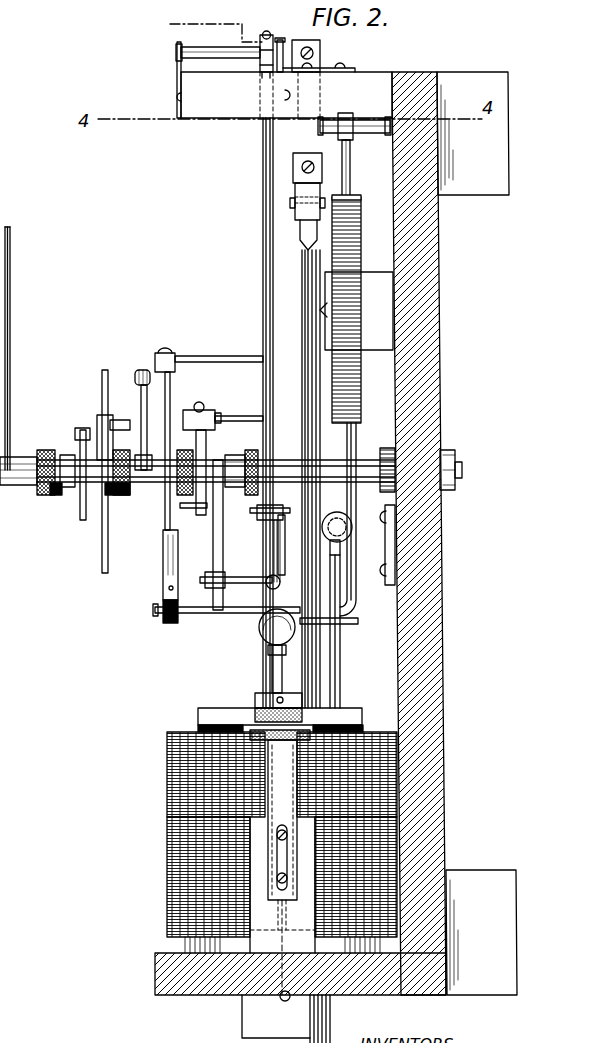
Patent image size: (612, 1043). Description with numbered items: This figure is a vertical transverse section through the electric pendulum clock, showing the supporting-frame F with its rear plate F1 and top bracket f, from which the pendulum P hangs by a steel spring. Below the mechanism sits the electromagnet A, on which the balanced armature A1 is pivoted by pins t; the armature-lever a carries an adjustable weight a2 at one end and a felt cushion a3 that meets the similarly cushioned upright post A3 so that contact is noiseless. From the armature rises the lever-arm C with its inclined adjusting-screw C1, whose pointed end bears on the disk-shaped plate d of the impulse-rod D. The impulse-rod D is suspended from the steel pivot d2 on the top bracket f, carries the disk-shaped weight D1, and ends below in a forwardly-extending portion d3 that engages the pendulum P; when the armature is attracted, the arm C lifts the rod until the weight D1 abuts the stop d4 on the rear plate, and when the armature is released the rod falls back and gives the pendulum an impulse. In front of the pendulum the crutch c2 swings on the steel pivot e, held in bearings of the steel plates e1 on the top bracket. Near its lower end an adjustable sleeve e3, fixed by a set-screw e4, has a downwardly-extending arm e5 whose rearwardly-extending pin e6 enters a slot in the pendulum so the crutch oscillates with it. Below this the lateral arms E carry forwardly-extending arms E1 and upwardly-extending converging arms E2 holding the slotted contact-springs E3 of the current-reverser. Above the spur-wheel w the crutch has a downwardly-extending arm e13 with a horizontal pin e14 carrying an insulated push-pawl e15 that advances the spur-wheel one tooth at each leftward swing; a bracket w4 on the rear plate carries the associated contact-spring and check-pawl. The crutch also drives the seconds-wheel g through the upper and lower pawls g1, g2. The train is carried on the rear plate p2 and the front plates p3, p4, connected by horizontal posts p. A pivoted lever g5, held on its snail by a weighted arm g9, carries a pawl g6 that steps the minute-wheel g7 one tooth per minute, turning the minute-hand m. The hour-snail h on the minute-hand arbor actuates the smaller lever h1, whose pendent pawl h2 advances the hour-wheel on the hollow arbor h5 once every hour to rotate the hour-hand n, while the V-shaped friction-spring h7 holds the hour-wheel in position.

The supporting-frame F is at (446, 848).
The frame upright F1 is at (434, 365).
The steel plates e1 is at (178, 72).
The steel pivot e is at (221, 60).
The top bracket f is at (284, 79).
The steel pivot d2 is at (362, 125).
The impulse-rod D is at (350, 168).
The disk-shaped weight D1 is at (361, 240).
The stop d4 is at (356, 311).
The pendulum P is at (310, 293).
The crutch c2 is at (264, 326).
The minute-hand m is at (0, 292).
The hour-hand n is at (6, 346).
The horizontal posts p is at (286, 462).
The hollow arbor h5 is at (28, 470).
The V-shaped friction-spring h7 is at (56, 452).
The front plate p4 is at (53, 497).
The pendent pawl h2 is at (78, 428).
The hour-snail h is at (82, 518).
The minute-wheel g7 is at (102, 390).
The pawl g6 is at (113, 420).
The third plate p3 is at (126, 497).
The weighted arm g9 is at (135, 377).
The pivoted lever g5 is at (147, 444).
The upper pawl g1 is at (176, 355).
The seconds-wheel g is at (170, 393).
The lower pawl g2 is at (163, 589).
The rear plate p2 is at (177, 493).
The bracket w4 is at (180, 507).
The push-pawl e15 is at (204, 403).
The pin e14 is at (229, 416).
The downwardly-extending arm e13 is at (269, 403).
The spur-wheel w is at (206, 450).
The lever h1 is at (252, 450).
The slotted contact-springs E3 is at (213, 528).
The adjustable sleeve e3 is at (262, 521).
The set-screw e4 is at (254, 513).
The downwardly-extending arm e5 is at (292, 552).
The upwardly-extending arms E2 is at (211, 575).
The lateral arms E is at (266, 578).
The forwardly-extending arms E1 is at (245, 607).
The disk-shaped plate d is at (352, 525).
The inclined adjusting-screw C1 is at (350, 533).
The rearwardly-extending pin e6 is at (320, 570).
The forwardly-extending portion d3 is at (358, 620).
The lever-arm C is at (340, 629).
The adjustable weight a2 is at (266, 641).
The block a is at (276, 697).
The cushion a3 is at (302, 716).
The pins t is at (200, 718).
The armature A1 is at (230, 712).
The electromagnet A is at (400, 808).
The upright post A3 is at (282, 870).